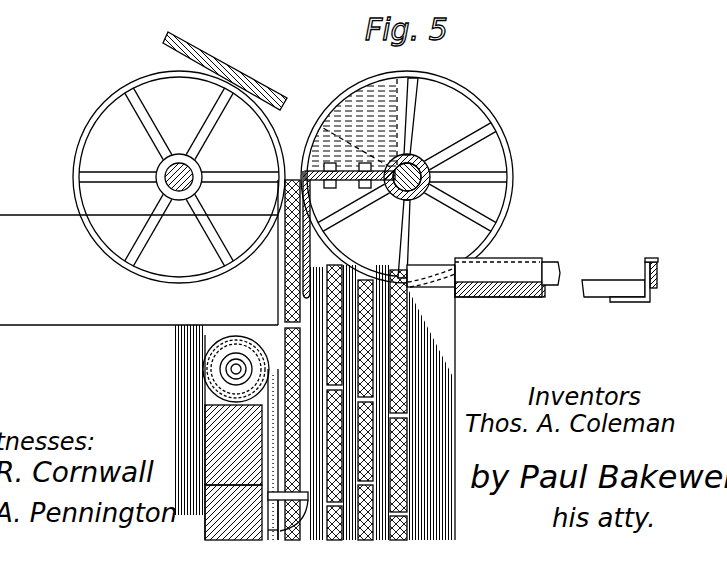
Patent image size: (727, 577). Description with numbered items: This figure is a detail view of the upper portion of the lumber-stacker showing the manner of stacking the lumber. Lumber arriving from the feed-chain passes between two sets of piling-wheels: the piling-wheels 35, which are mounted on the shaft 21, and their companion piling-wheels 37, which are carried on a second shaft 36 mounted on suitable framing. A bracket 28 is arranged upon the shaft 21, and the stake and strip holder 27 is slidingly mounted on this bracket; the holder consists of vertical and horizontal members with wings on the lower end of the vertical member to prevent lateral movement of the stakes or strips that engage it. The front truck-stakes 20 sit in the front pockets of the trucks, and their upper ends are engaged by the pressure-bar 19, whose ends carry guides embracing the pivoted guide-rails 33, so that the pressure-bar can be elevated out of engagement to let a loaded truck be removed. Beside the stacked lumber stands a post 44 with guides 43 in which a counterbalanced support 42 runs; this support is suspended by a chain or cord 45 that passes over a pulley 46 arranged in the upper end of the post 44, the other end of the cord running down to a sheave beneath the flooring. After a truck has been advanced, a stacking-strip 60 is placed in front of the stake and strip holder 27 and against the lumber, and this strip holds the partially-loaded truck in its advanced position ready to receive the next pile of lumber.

The pressure-bar 19 is at (508, 288).
The front truck-stakes 20 is at (431, 402).
The shaft 21 is at (431, 177).
The stake and strip holder 27 is at (307, 233).
The bracket 28 is at (322, 131).
The guide-rails 33 is at (553, 274).
The piling-wheels 35 is at (486, 107).
The shaft 36 is at (171, 170).
The piling-wheels 37 is at (174, 73).
The counterbalanced support 42 is at (291, 516).
The guides 43 is at (233, 512).
The post 44 is at (233, 445).
The chain or cord 45 is at (270, 398).
The pulley 46 is at (230, 366).
The stacking-strip 60 is at (320, 332).